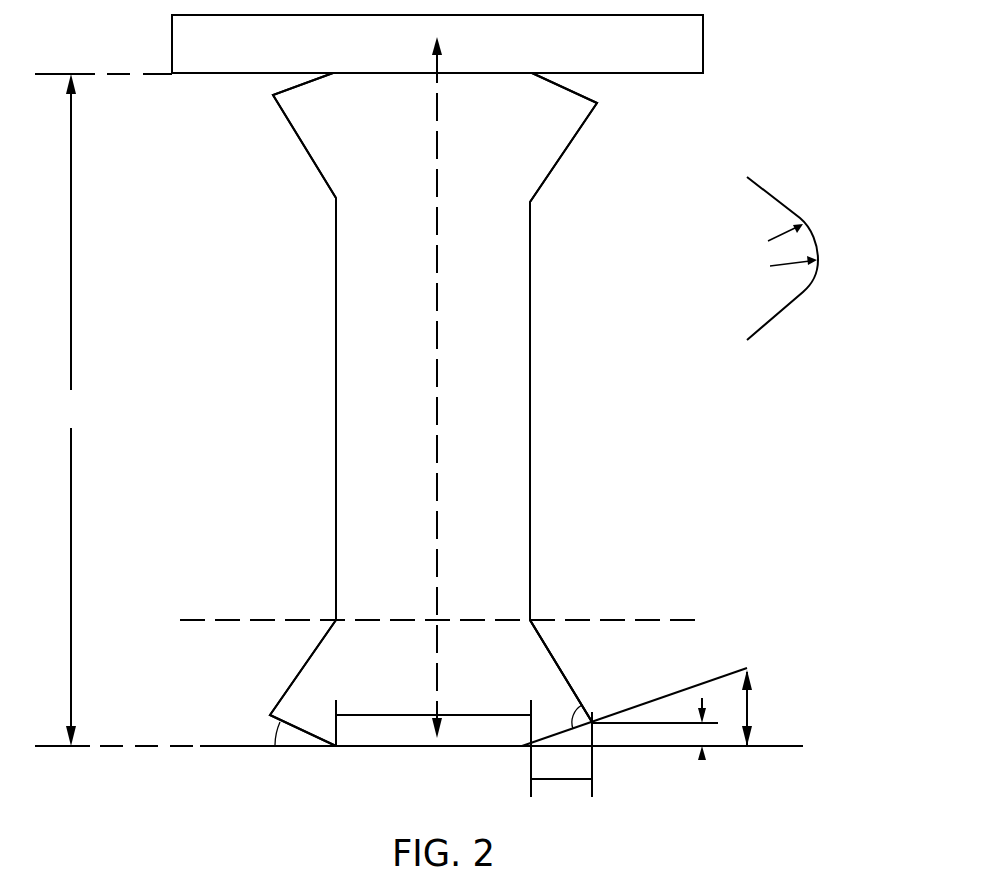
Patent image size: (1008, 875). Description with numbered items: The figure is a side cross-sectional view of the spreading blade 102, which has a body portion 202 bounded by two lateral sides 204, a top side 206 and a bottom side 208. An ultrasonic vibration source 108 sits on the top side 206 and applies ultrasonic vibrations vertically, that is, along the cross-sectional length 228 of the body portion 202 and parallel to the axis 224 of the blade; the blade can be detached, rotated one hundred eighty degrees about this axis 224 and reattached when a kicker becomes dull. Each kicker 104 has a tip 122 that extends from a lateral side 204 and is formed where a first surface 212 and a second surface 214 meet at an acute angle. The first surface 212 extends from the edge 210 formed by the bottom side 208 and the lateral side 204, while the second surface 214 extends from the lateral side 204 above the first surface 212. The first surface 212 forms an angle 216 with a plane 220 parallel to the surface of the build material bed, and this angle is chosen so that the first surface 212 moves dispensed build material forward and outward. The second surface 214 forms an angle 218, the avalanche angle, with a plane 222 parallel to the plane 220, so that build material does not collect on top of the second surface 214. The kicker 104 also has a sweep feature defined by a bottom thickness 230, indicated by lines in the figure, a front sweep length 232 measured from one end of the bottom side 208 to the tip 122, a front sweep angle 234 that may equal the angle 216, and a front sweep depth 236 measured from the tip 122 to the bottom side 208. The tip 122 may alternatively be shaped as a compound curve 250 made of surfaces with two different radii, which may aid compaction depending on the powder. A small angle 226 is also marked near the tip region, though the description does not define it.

The spreading blade 102 is at (532, 218).
The kicker 104 is at (310, 95).
The ultrasonic vibration source 108 is at (703, 45).
The tip 122 is at (578, 707).
The body portion 202 is at (510, 328).
The lateral side 204 is at (336, 313).
The top side 206 is at (493, 72).
The bottom side 208 is at (395, 747).
The edge 210 is at (532, 747).
The first surface 212 is at (565, 735).
The second surface 214 is at (557, 665).
The angle 216 is at (277, 733).
The angle 218 is at (307, 623).
The plane 220 is at (768, 744).
The plane 222 is at (683, 613).
The axis 224 is at (437, 290).
The angle 226 is at (587, 712).
The cross-sectional length 228 is at (71, 237).
The bottom thickness 230 is at (452, 712).
The front sweep length 232 is at (573, 783).
The front sweep angle 234 is at (745, 702).
The front sweep depth 236 is at (702, 760).
The compound curve 250 is at (812, 215).